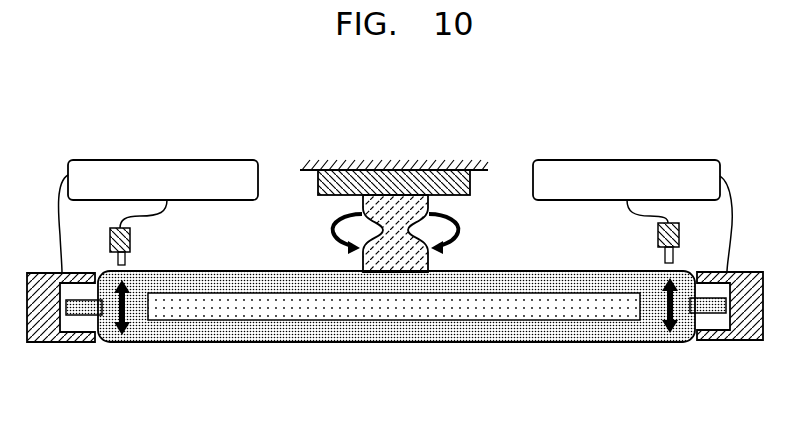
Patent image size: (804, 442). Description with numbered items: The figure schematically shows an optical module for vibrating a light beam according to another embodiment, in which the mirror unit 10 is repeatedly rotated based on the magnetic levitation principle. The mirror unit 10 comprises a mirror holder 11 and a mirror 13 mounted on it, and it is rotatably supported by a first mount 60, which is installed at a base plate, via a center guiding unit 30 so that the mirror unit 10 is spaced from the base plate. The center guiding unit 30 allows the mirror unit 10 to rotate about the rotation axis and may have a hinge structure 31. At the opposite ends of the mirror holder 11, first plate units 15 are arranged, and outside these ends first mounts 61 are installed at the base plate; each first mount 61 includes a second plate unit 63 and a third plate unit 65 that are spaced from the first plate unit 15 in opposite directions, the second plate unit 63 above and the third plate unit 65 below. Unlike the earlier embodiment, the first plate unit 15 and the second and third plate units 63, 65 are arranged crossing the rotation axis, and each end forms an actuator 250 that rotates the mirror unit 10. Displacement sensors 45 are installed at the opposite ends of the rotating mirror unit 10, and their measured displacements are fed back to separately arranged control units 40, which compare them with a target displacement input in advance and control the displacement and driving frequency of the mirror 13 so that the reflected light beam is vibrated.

The mirror unit 10 is at (396, 346).
The mirror holder 11 is at (368, 325).
The mirror 13 is at (426, 300).
The first plate unit 15 is at (88, 316).
The center guiding unit 30 is at (416, 233).
The hinge structure 31 is at (397, 222).
The control unit 40 is at (164, 158).
The displacement sensor 45 is at (128, 257).
The first mount 60 is at (489, 153).
The first mount 61 is at (44, 280).
The second plate unit 63 is at (80, 280).
The third plate unit 65 is at (70, 342).
The actuator 250 is at (397, 328).